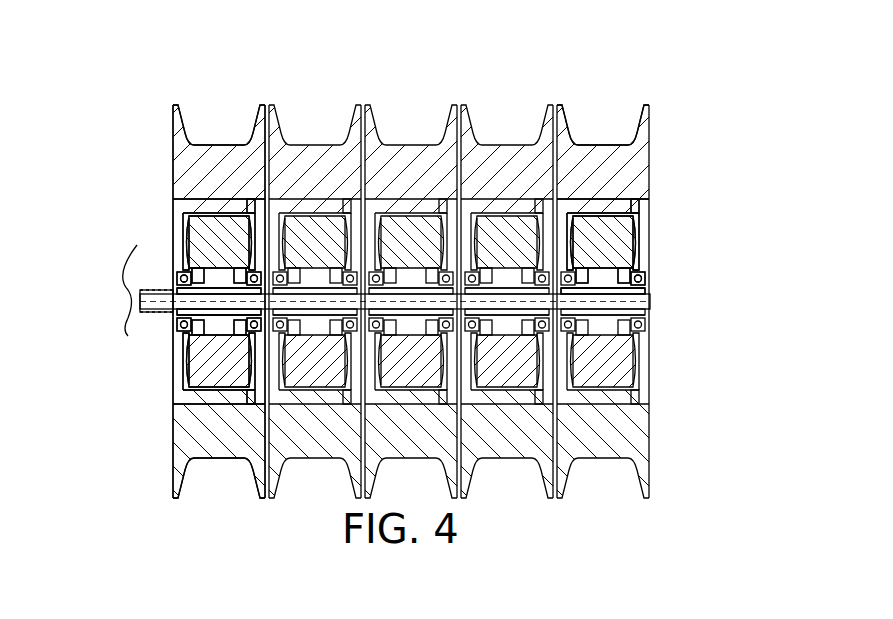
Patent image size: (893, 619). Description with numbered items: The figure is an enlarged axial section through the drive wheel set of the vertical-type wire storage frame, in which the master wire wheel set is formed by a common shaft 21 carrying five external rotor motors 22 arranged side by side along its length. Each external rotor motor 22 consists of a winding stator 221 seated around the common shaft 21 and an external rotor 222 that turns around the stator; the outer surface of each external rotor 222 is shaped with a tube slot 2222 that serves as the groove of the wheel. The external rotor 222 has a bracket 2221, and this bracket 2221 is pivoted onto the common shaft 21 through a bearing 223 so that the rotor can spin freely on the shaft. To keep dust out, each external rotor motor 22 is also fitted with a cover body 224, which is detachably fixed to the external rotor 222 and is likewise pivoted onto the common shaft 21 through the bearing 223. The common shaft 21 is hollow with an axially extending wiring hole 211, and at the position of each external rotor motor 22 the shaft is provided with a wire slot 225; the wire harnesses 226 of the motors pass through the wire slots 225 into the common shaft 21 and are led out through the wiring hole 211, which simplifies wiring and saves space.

The common shaft 21 is at (150, 266).
The wiring hole 211 is at (150, 297).
The external rotor motor 22 is at (172, 105).
The winding stator 221 is at (612, 248).
The external rotor 222 is at (608, 203).
The bracket 2221 is at (628, 225).
The tube slot 2222 is at (610, 163).
The bearing 223 is at (595, 285).
The cover body 224 is at (645, 262).
The wire slot 225 is at (165, 310).
The wire harness 226 is at (142, 313).